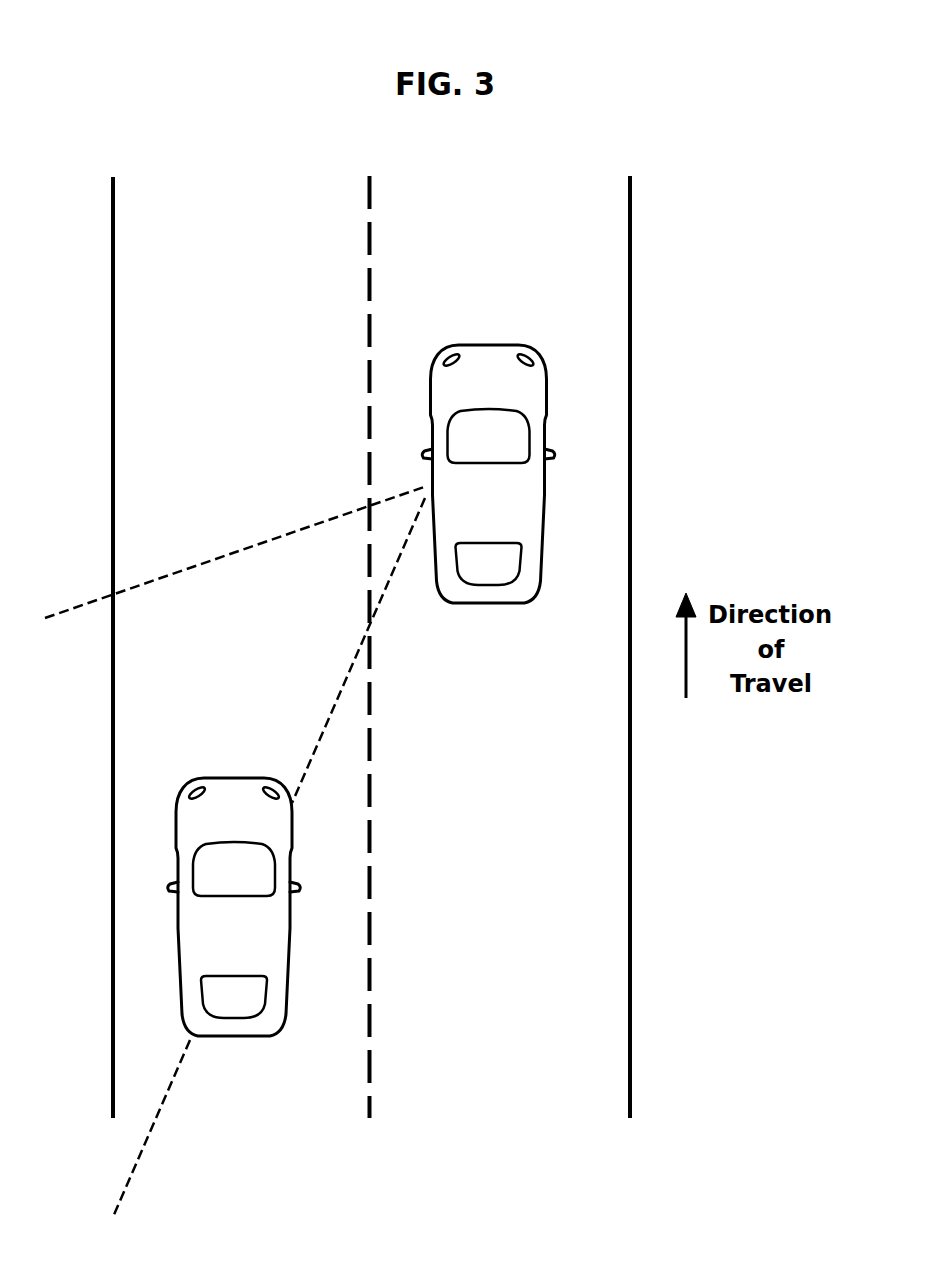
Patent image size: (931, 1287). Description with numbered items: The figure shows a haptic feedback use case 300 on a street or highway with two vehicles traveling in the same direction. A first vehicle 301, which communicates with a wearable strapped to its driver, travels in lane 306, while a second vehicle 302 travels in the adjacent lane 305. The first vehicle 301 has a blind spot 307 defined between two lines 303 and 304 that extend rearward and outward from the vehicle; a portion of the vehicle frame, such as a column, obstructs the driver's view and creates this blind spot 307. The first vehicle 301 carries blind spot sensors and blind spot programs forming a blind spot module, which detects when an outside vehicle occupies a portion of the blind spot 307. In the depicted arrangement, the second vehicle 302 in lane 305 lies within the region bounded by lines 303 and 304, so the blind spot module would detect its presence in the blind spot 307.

The driving scenario / roadway environment 300 is at (740, 175).
The first vehicle 301 is at (489, 345).
The second vehicle 302 is at (232, 777).
The line 303 is at (233, 550).
The line 304 is at (345, 690).
The lane 305 is at (232, 188).
The lane 306 is at (500, 188).
The blind spot 307 is at (202, 638).